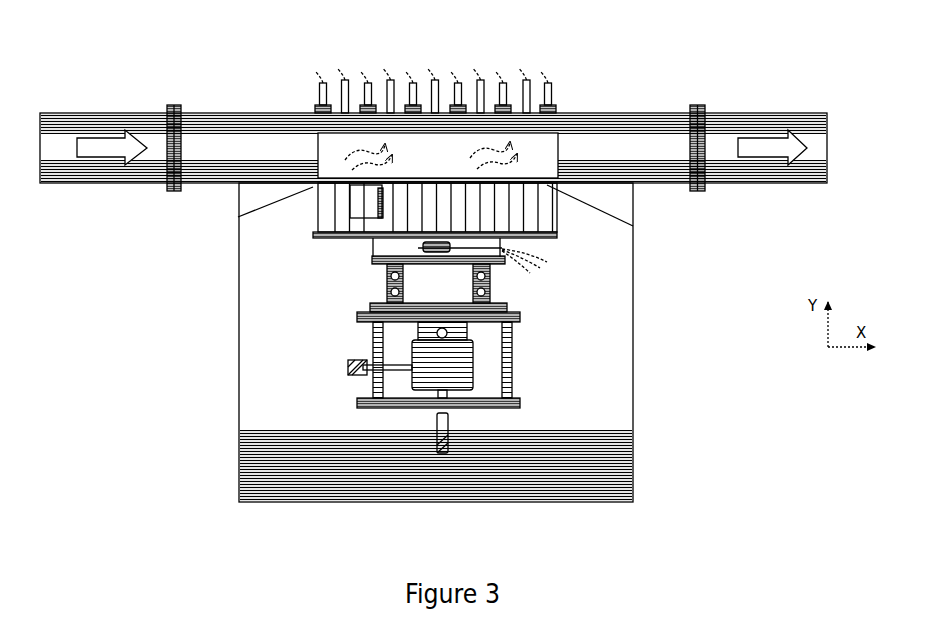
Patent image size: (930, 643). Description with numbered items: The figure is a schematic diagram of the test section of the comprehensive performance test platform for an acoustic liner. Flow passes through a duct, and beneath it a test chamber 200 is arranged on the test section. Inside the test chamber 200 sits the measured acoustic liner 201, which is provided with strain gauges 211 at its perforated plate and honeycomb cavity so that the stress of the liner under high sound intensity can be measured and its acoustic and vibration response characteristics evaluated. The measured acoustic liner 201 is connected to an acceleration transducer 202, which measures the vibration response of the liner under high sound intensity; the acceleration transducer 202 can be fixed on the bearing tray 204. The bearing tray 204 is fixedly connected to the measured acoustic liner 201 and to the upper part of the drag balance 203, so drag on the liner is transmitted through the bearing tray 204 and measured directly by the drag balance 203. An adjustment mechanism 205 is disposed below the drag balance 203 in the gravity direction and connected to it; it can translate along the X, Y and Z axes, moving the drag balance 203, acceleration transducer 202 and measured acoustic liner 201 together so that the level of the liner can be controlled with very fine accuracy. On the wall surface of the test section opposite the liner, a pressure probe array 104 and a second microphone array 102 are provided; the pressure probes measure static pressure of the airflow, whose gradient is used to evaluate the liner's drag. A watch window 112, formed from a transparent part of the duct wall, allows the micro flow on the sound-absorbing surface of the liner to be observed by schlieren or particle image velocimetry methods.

The second microphone array 102 is at (500, 21).
The pressure probe array 104 is at (738, 50).
The watch window 112 is at (330, 150).
The test chamber 200 is at (597, 492).
The measured acoustic liner 201 is at (547, 193).
The acceleration transducer 202 is at (387, 276).
The drag balance 203 is at (493, 280).
The bearing tray 204 is at (430, 248).
The adjustment mechanism 205 is at (448, 360).
The strain gauge 211 is at (377, 213).